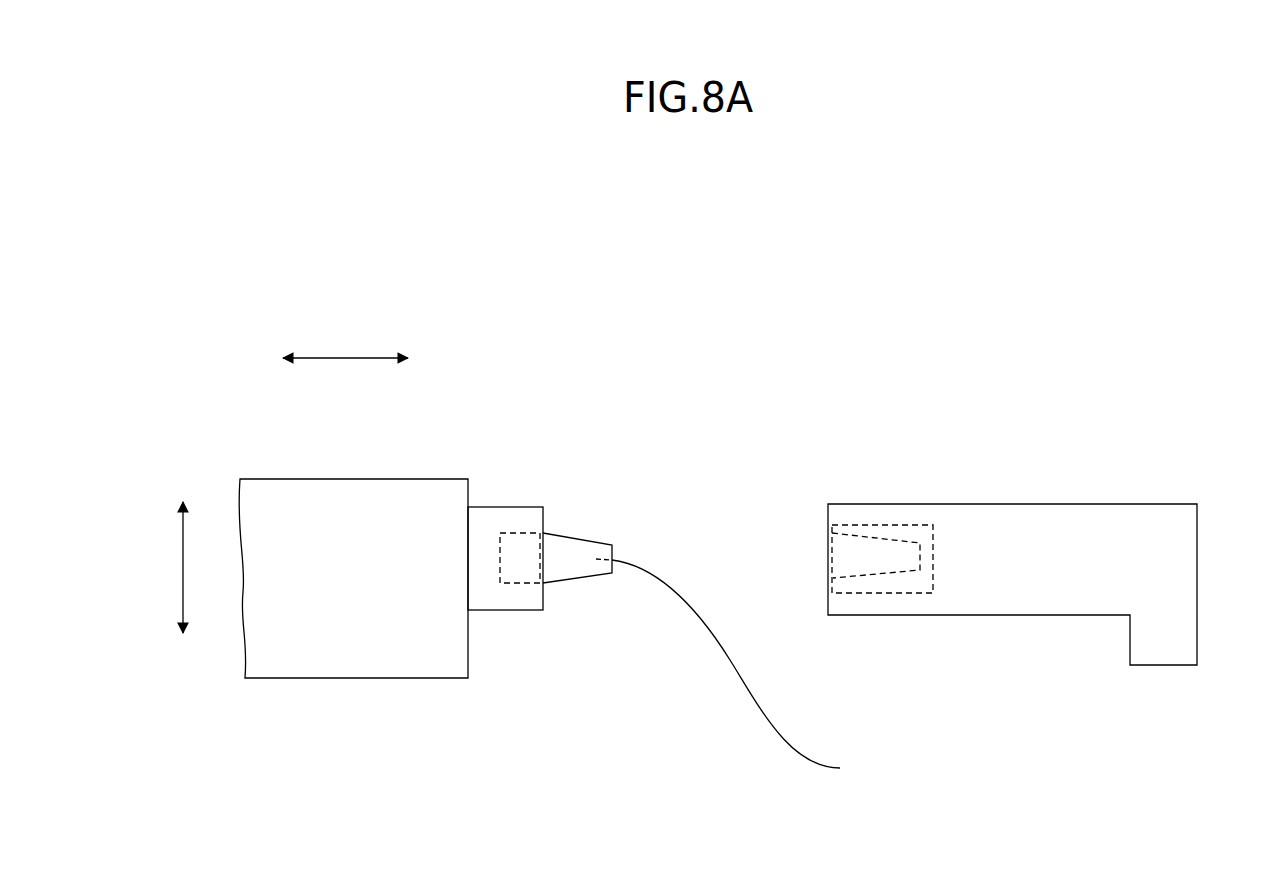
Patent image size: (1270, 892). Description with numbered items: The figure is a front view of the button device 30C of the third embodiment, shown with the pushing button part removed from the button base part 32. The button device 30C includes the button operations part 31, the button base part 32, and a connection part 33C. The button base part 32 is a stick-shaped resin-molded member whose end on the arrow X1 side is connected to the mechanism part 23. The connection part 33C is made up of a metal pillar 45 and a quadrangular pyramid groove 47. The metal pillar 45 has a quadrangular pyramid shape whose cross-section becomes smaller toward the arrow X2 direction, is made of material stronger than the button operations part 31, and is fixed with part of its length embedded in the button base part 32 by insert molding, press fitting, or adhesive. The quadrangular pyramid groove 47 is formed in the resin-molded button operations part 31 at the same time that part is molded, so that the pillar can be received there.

The button device 30C is at (209, 296).
The mechanism part 23 is at (348, 663).
The button base part 32 is at (504, 496).
The button operations part 31 is at (1050, 496).
The metal pillar 45 is at (742, 671).
The quadrangular pyramid groove 47 is at (833, 569).
The connection part 33C is at (783, 656).